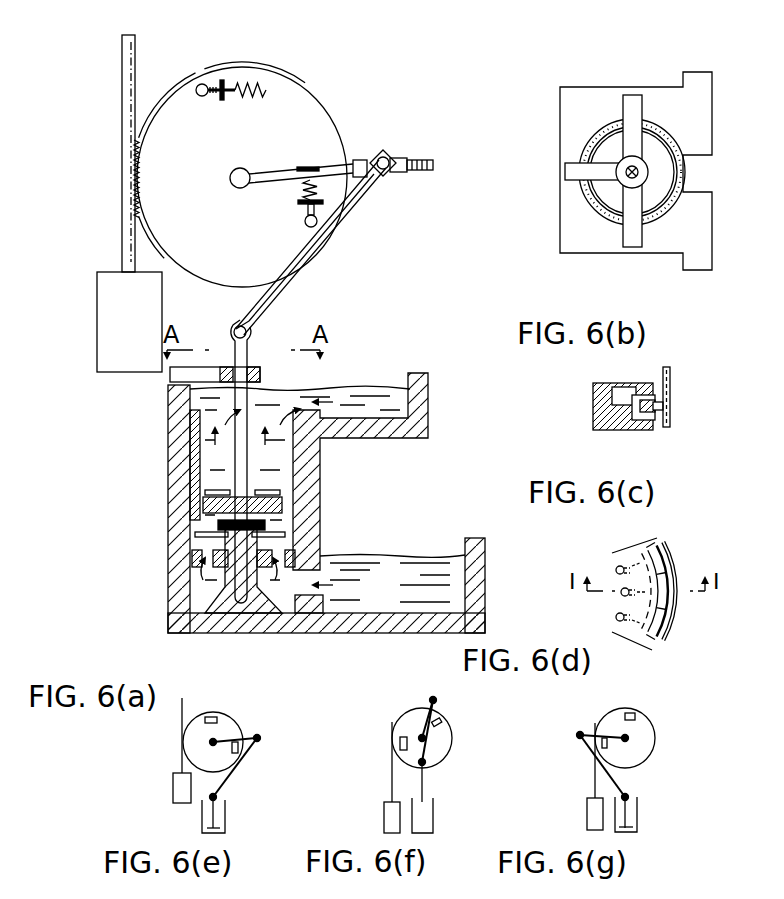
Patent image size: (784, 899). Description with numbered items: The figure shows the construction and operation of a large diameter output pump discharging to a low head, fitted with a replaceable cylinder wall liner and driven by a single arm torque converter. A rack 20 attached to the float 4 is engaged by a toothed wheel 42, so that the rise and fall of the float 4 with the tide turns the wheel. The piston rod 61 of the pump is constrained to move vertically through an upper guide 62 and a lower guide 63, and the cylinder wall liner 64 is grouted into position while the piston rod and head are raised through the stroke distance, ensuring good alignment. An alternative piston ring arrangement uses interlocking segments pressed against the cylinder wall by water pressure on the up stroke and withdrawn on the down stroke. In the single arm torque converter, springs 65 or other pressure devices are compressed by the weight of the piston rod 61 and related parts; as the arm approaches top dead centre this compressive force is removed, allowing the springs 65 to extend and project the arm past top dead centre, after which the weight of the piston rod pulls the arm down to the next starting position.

In FIG. 6A, the float 4 is at (97, 334).
In FIG. 6A, the rack 20 is at (122, 127).
In FIG. 6A, the toothed wheel 42 is at (315, 128).
In FIG. 6A, the piston rod 61 is at (238, 428).
In FIG. 6B, the piston rod 61 is at (640, 170).
In FIG. 6A, the upper guide 62 is at (253, 366).
In FIG. 6B, the upper guide 62 is at (628, 232).
In FIG. 6A, the lower guide 63 is at (210, 528).
In FIG. 6A, the cylinder wall liner 64 is at (200, 470).
In FIG. 6B, the cylinder wall liner 64 is at (595, 137).
In FIG. 6A, the spring 65 is at (252, 104).
In FIG. 6E, the spring 65 is at (211, 717).